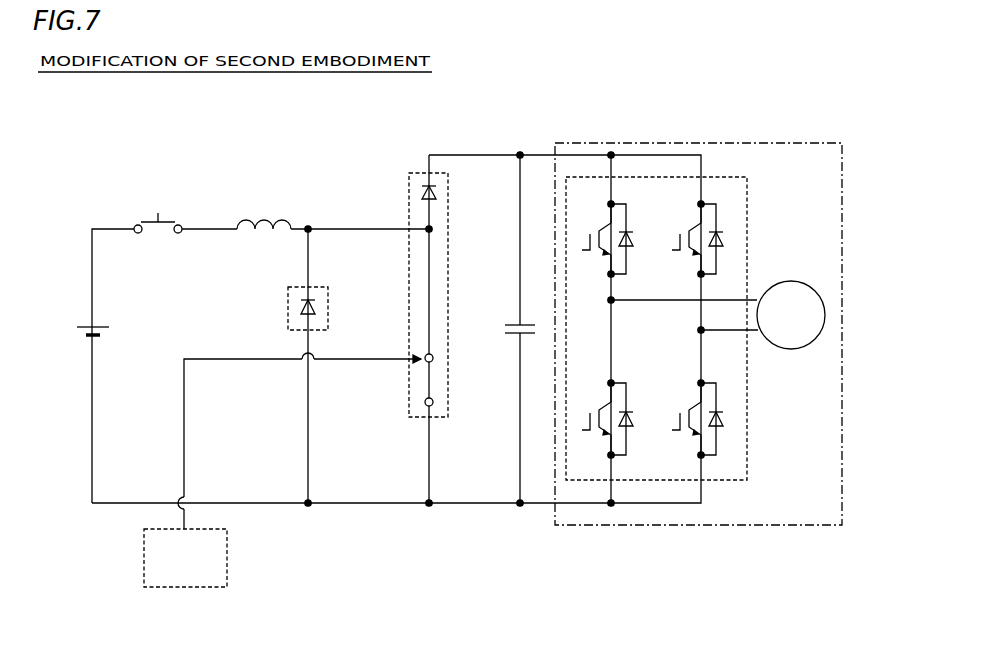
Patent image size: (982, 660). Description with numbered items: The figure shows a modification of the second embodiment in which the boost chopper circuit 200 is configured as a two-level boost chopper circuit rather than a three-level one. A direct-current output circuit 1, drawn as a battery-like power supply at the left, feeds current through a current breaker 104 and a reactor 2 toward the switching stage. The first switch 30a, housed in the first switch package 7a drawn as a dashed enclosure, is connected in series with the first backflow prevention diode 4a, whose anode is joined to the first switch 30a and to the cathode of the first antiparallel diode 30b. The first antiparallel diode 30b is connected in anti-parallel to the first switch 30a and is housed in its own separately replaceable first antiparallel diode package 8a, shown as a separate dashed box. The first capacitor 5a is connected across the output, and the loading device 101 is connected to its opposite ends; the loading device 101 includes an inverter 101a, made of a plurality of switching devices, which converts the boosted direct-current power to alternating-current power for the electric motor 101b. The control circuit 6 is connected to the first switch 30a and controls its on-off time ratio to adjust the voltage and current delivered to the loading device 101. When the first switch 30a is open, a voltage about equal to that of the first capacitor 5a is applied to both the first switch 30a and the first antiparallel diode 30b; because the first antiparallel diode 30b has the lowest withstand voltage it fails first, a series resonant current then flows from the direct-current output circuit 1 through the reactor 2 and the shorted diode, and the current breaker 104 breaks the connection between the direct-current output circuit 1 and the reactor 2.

The boost chopper circuit 200 is at (92, 163).
The current breaker 104 is at (148, 219).
The reactor 2 is at (240, 221).
The direct-current output circuit 1 is at (82, 326).
The first antiparallel diode 30b is at (311, 287).
The first antiparallel diode package 8a is at (288, 312).
The first backflow prevention diode 4a is at (422, 191).
The first switch package 7a is at (438, 173).
The first switch 30a is at (428, 378).
The first capacitor 5a is at (512, 324).
The control circuit 6 is at (144, 555).
The loading device 101 is at (713, 143).
The inverter 101a is at (748, 229).
The electric motor 101b is at (793, 272).